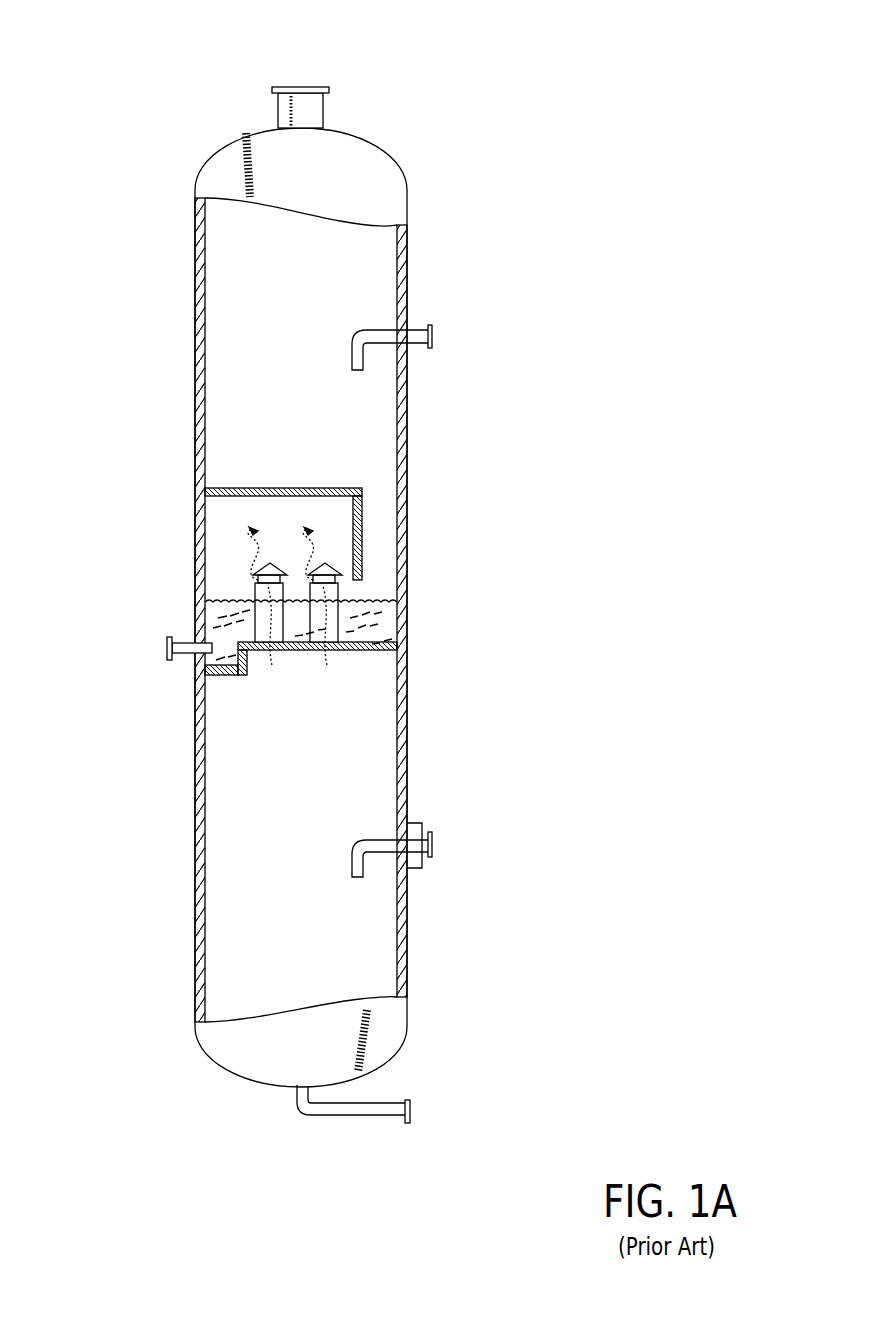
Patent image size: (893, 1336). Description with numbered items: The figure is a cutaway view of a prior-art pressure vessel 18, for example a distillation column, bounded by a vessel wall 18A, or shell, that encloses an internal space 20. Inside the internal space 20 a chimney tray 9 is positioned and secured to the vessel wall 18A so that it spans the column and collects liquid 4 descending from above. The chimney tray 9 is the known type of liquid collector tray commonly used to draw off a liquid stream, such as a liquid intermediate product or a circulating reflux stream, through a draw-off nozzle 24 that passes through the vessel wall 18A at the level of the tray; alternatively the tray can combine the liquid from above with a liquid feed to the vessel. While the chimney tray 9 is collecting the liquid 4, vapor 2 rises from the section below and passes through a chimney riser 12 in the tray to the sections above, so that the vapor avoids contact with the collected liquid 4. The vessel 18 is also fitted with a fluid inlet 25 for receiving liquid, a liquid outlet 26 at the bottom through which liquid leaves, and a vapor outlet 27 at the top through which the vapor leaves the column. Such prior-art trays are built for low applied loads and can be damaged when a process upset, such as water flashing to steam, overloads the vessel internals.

The vessel 18 is at (407, 212).
The vessel wall 18A is at (195, 318).
The internal space 20 is at (238, 293).
The vapor outlet 27 is at (300, 87).
The fluid inlet 25 is at (433, 337).
The liquid outlet 26 is at (365, 1103).
The draw-off nozzle 24 is at (167, 648).
The chimney riser 12 is at (338, 589).
The chimney tray 9 is at (378, 651).
The vapor 2 is at (260, 555).
The liquid 4 is at (217, 613).